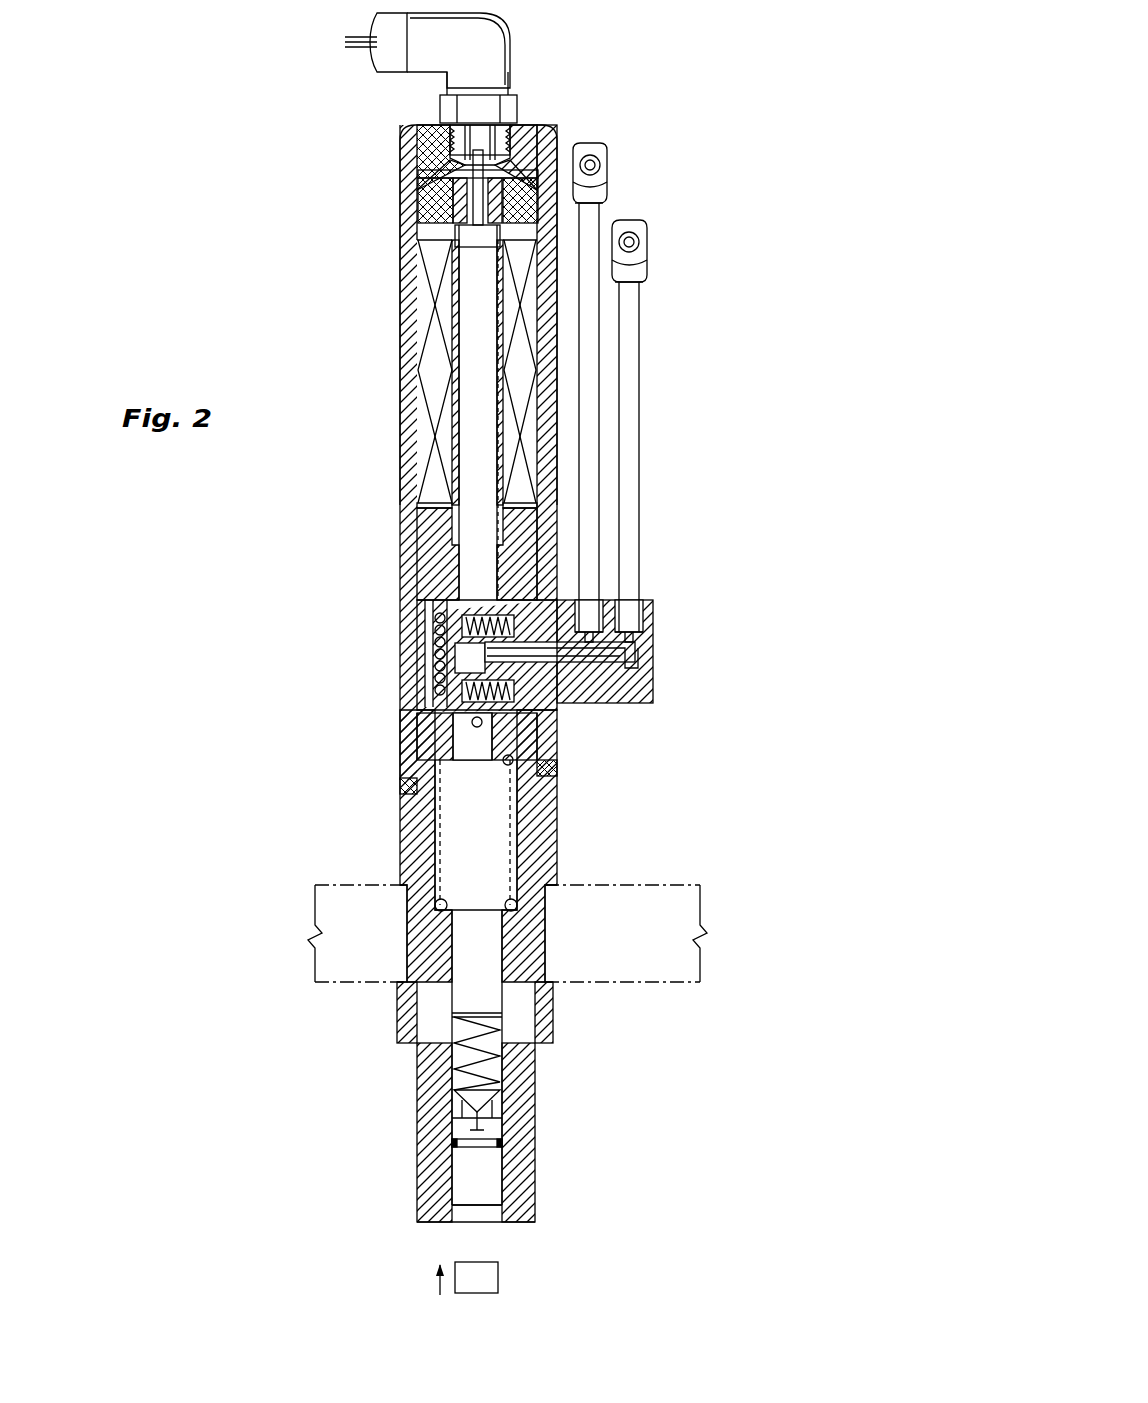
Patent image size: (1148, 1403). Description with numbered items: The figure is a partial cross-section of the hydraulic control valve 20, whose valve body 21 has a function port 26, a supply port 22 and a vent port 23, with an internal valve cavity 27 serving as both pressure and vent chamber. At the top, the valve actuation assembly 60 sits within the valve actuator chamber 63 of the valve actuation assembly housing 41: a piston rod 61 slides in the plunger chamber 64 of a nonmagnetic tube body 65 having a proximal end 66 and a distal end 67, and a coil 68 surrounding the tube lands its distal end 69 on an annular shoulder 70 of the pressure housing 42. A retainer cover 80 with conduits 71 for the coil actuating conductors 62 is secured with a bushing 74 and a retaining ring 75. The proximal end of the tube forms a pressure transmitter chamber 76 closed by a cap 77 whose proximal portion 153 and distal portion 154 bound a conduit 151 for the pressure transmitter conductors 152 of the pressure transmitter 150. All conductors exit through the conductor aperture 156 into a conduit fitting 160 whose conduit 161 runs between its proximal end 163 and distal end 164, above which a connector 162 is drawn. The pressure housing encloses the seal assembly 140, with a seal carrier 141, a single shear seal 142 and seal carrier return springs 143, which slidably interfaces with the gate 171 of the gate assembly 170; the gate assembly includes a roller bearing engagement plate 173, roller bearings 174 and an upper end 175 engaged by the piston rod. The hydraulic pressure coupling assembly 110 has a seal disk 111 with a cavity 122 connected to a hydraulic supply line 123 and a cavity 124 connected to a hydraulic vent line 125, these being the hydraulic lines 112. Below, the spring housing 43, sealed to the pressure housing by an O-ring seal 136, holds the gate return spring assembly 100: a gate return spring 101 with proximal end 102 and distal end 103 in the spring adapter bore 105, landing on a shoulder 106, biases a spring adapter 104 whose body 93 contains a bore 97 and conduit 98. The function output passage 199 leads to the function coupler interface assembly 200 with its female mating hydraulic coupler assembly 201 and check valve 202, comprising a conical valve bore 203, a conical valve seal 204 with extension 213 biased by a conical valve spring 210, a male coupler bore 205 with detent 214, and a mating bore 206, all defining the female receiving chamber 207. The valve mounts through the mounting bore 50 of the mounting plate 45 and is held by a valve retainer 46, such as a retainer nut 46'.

The hydraulic control valve 20 is at (770, 487).
The valve body 21 is at (405, 300).
The supply port 22 is at (640, 650).
The vent port 23 is at (608, 703).
The function port 26 is at (497, 1230).
The internal valve cavity 27 is at (458, 250).
The valve actuation assembly housing 41 is at (559, 437).
The pressure housing 42 is at (545, 525).
The spring housing 43 is at (535, 1060).
The mounting plate 45 is at (680, 885).
The valve retainer 46 is at (548, 1012).
The retainer nut 46' is at (615, 1001).
The mounting bore 50 is at (545, 880).
The valve actuation assembly 60 is at (350, 358).
The piston rod 61 is at (470, 410).
The coil actuating conductors 62 is at (420, 185).
The valve actuator chamber 63 is at (540, 390).
The plunger chamber 64 is at (455, 383).
The tube body 65 is at (545, 366).
The proximal end of tube 66 is at (556, 310).
The distal end of tube 67 is at (505, 500).
The coil 68 is at (414, 330).
The distal end of coil 69 is at (415, 455).
The annular shoulder 70 is at (425, 500).
The conduits 71 is at (445, 195).
The bushing 74 is at (565, 207).
The retaining ring 75 is at (470, 176).
The pressure transmitter chamber 76 is at (440, 190).
The cap 77 is at (530, 197).
The retainer cover 80 is at (430, 212).
The body of spring adapter 93 is at (425, 745).
The bore 97 is at (510, 845).
The conduit 98 is at (520, 800).
The gate return spring assembly 100 is at (355, 795).
The gate return spring 101 is at (435, 905).
The proximal end of gate return spring 102 is at (415, 768).
The distal end of gate return spring 103 is at (428, 905).
The spring adapter 104 is at (540, 770).
The spring adapter bore 105 is at (455, 838).
The shoulder 106 is at (400, 955).
The hydraulic pressure coupling assembly 110 is at (667, 657).
The seal disk 111 is at (650, 680).
The hydraulic lines 112 is at (640, 470).
The cavity 122 is at (655, 620).
The hydraulic supply line 123 is at (600, 343).
The cavity 124 is at (620, 700).
The hydraulic vent line 125 is at (640, 558).
The O-ring seal 136 is at (400, 788).
The seal assembly 140 is at (560, 600).
The seal carrier 141 is at (430, 598).
The shear seal 142 is at (560, 715).
The seal carrier return springs 143 is at (545, 560).
The pressure transmitter 150 is at (470, 233).
The conduit 151 is at (460, 168).
The pressure transmitter conductors 152 is at (608, 150).
The proximal portion of cap 153 is at (500, 180).
The distal portion of cap 154 is at (645, 255).
The conductor aperture 156 is at (449, 130).
The conduit fitting 160 is at (518, 96).
The conduit 161 is at (505, 130).
The electrical connector 162 is at (405, 16).
The proximal end of conduit fitting 163 is at (510, 86).
The distal end of conduit fitting 164 is at (505, 170).
The gate assembly 170 is at (435, 680).
The gate 171 is at (425, 548).
The roller bearing engagement plate 173 is at (430, 612).
The roller bearings 174 is at (430, 640).
The upper end of gate assembly 175 is at (420, 520).
The function output passage 199 is at (500, 950).
The function coupler interface assembly 200 is at (702, 1100).
The female mating hydraulic coupler assembly 201 is at (502, 1175).
The check valve 202 is at (398, 1053).
The conical valve bore 203 is at (465, 1112).
The conical valve seal 204 is at (500, 1080).
The male coupler bore 205 is at (490, 1160).
The mating bore 206 is at (455, 1224).
The female receiving chamber 207 is at (460, 1190).
The conical valve spring 210 is at (470, 1078).
The extension 213 is at (490, 1127).
The detent 214 is at (455, 1143).